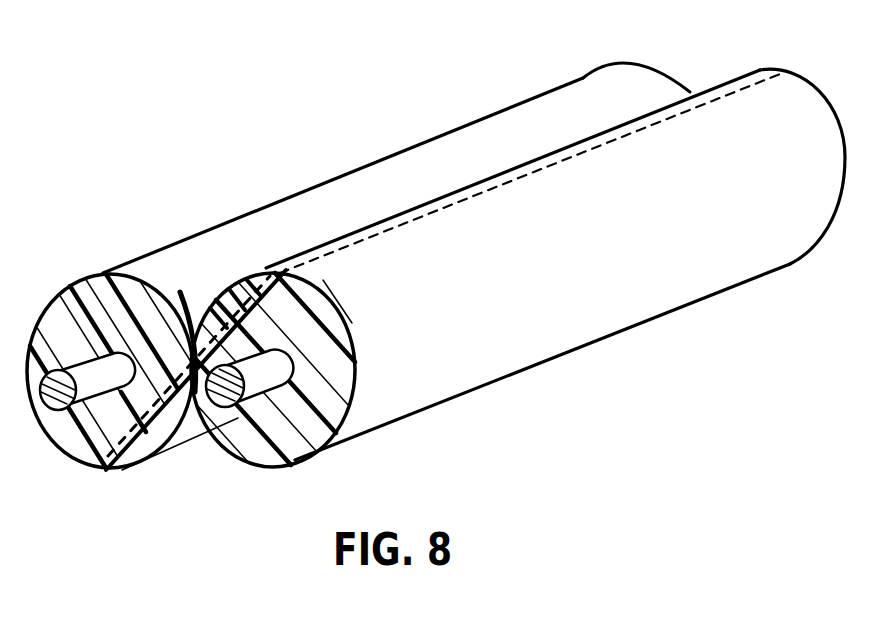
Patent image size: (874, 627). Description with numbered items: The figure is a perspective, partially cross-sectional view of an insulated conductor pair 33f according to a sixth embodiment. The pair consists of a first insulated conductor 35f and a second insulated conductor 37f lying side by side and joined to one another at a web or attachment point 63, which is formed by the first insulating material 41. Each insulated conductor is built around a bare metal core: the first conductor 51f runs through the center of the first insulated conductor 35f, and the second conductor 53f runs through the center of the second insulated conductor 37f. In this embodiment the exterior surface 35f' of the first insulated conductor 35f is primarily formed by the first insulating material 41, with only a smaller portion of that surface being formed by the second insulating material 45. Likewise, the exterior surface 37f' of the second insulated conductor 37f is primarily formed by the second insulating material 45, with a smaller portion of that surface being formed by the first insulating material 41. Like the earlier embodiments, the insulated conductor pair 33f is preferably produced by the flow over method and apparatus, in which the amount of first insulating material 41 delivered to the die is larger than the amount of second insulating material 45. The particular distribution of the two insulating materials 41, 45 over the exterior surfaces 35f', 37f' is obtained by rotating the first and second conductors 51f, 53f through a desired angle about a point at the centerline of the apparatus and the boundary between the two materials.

The insulated conductor pair 33f is at (322, 170).
The first insulated conductor 35f is at (298, 251).
The exterior surface of the first insulated conductor 35f' is at (343, 175).
The second insulated conductor 37f is at (490, 365).
The exterior surface of the second insulated conductor 37f' is at (555, 233).
The first insulating material 41 is at (741, 82).
The second insulating material 45 is at (204, 432).
The first conductor 51f is at (60, 400).
The second conductor 53f is at (227, 398).
The web or attachment point 63 is at (189, 345).